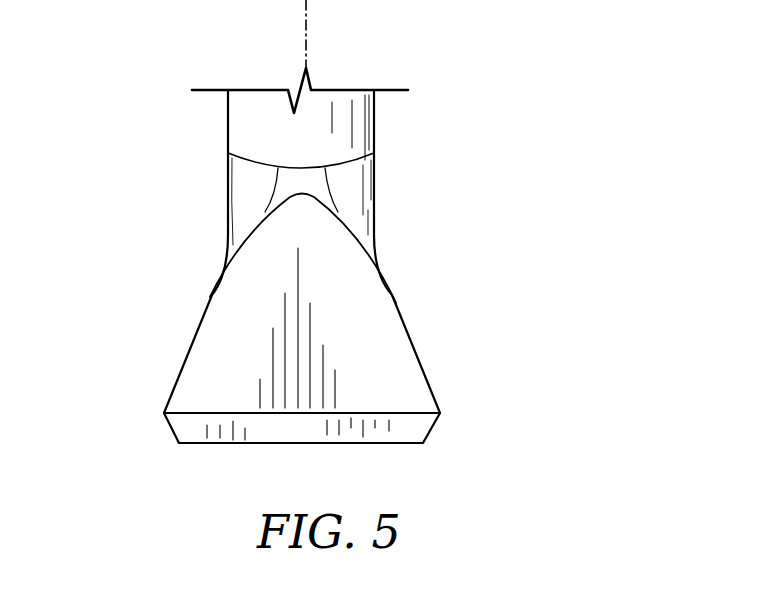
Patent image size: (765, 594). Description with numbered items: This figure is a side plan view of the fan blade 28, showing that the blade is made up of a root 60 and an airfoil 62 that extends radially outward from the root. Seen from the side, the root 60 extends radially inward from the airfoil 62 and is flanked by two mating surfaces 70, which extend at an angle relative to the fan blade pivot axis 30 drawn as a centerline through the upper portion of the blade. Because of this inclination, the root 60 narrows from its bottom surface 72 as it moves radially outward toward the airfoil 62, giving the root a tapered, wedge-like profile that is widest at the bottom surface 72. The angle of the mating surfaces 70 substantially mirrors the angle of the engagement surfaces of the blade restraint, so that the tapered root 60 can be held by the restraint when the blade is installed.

The fan blade 28 is at (320, 280).
The fan blade pivot axis 30 is at (308, 3).
The root 60 is at (375, 320).
The airfoil 62 is at (357, 132).
The mating surfaces 70 is at (188, 340).
The bottom surface 72 is at (407, 443).